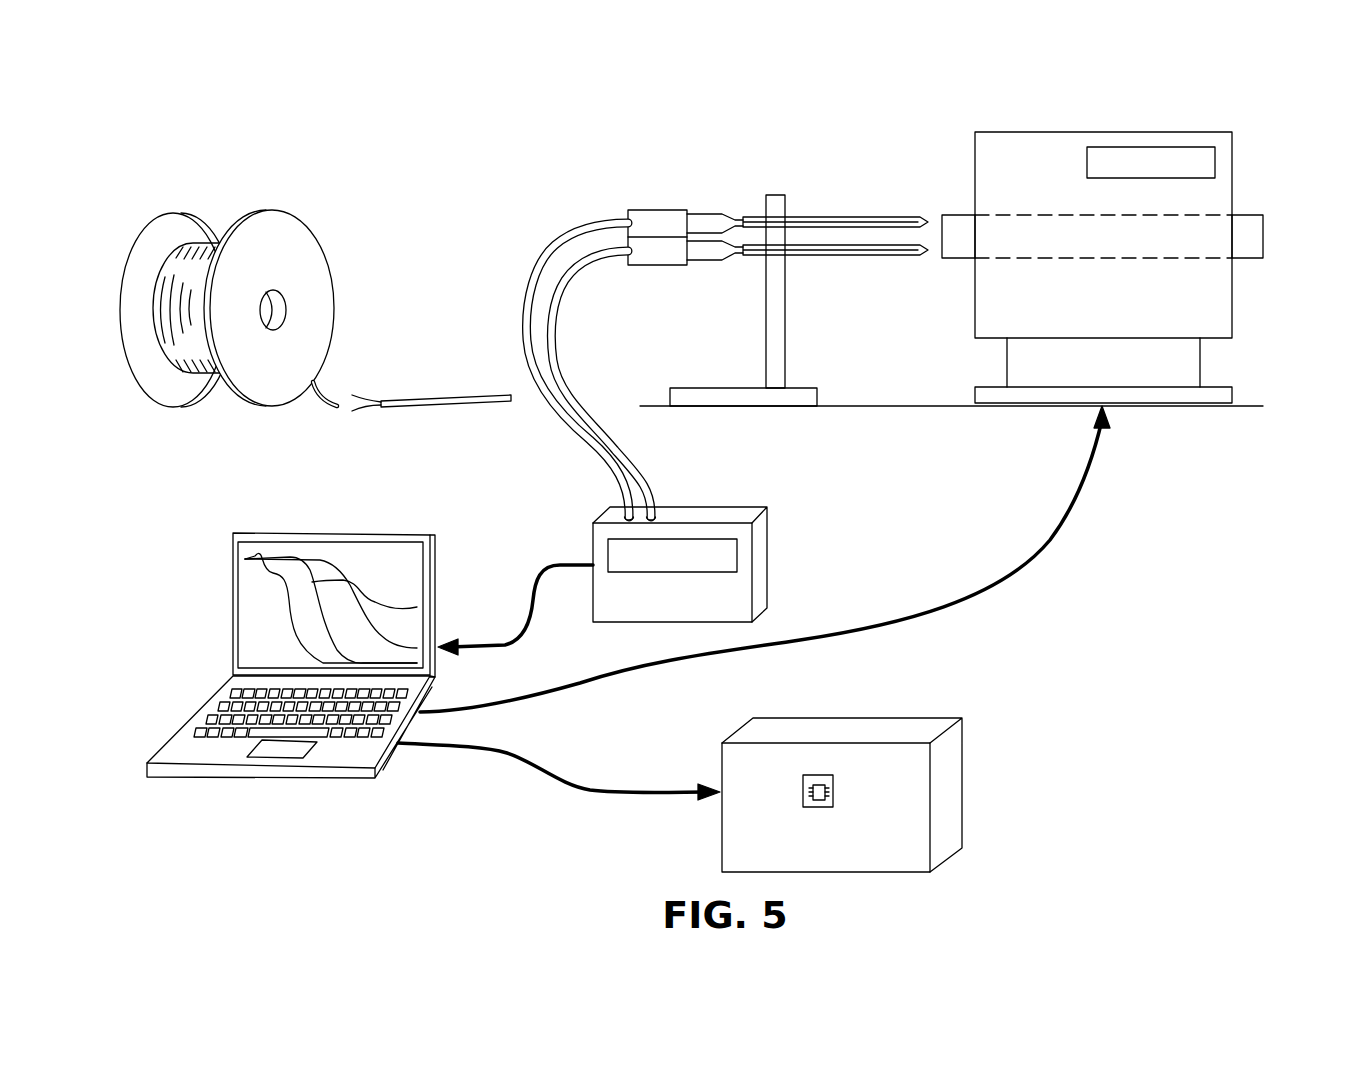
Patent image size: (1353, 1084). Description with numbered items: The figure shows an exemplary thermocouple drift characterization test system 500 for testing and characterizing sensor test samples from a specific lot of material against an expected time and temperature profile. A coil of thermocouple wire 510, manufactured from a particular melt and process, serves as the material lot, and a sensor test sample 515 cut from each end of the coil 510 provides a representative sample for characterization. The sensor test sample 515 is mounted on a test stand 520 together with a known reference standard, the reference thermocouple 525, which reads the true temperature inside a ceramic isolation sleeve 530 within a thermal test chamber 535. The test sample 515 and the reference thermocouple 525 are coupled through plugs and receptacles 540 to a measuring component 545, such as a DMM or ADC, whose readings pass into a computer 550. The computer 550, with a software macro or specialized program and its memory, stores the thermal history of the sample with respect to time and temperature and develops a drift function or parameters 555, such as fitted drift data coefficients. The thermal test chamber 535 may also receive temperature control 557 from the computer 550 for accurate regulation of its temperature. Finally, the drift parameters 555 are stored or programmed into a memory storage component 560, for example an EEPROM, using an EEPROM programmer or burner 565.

The thermocouple drift characterization test system 500 is at (215, 124).
The coil of thermocouple wire 510 is at (297, 217).
The sensor test sample 515 is at (432, 400).
The test stand 520 is at (777, 195).
The reference thermocouple 525 is at (848, 255).
The ceramic isolation sleeve 530 is at (1248, 215).
The thermal test chamber 535 is at (1135, 132).
The plugs and receptacles 540 is at (655, 210).
The measuring component 545 is at (767, 542).
The computer 550 is at (232, 566).
The drift function or parameters 555 is at (593, 792).
The temperature control 557 is at (1005, 578).
The memory storage component 560 is at (822, 783).
The EEPROM programmer or burner 565 is at (962, 775).